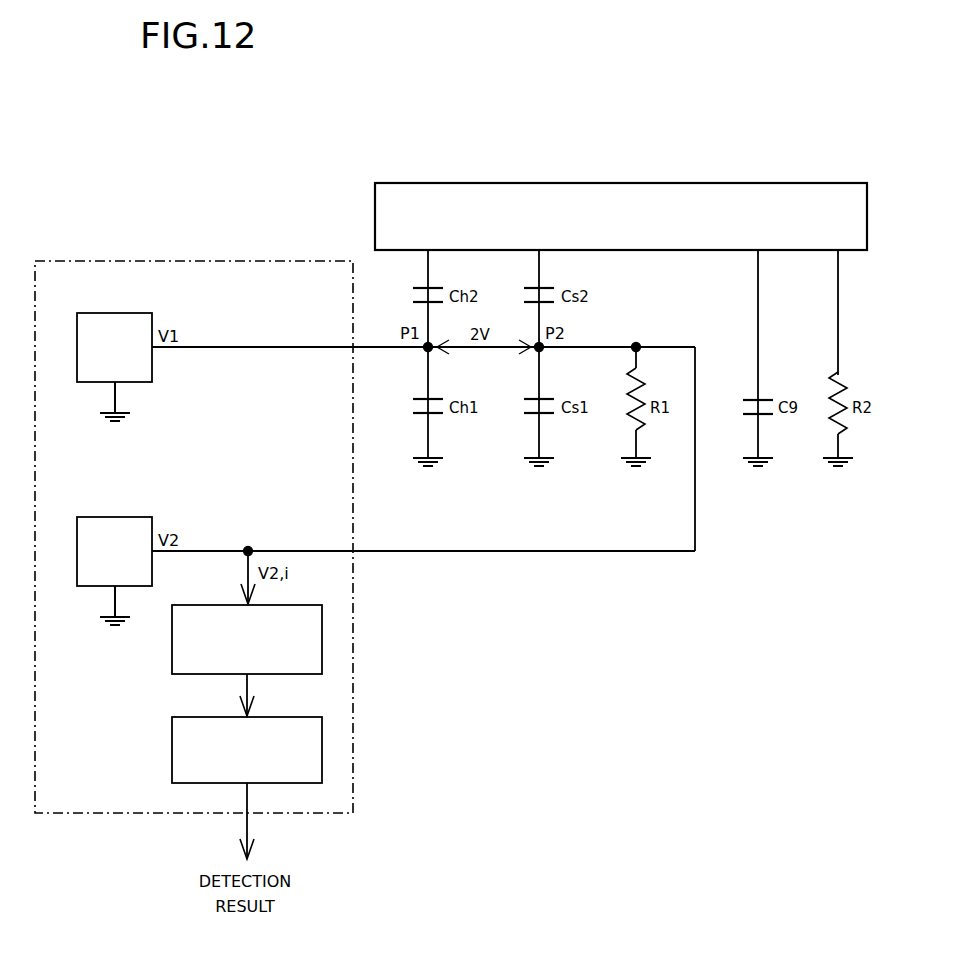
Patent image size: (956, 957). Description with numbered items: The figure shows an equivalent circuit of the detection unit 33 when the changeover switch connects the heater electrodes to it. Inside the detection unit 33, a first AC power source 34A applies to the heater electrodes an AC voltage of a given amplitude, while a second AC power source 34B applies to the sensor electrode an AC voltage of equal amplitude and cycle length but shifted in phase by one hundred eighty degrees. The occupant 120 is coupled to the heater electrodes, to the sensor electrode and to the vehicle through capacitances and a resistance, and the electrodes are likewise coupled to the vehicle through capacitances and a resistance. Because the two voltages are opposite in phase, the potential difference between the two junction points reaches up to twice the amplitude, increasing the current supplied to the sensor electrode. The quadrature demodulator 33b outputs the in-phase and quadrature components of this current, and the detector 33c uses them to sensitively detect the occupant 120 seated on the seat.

The occupant 120 is at (818, 183).
The detection unit 33 is at (268, 261).
The AC power source 34A is at (128, 313).
The AC power source 34B is at (126, 517).
The quadrature demodulator 33b is at (172, 660).
The detector 33c is at (172, 768).